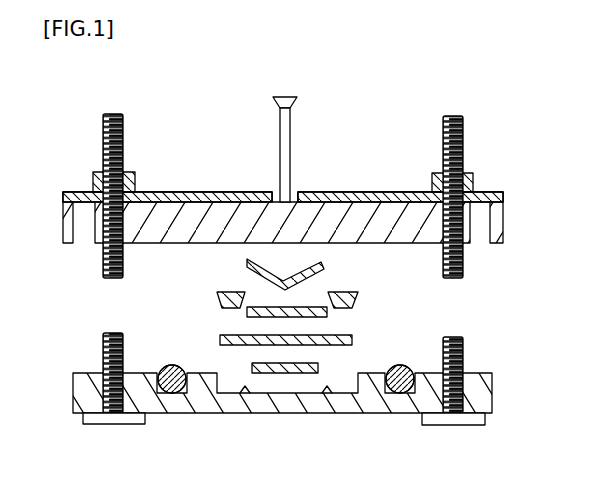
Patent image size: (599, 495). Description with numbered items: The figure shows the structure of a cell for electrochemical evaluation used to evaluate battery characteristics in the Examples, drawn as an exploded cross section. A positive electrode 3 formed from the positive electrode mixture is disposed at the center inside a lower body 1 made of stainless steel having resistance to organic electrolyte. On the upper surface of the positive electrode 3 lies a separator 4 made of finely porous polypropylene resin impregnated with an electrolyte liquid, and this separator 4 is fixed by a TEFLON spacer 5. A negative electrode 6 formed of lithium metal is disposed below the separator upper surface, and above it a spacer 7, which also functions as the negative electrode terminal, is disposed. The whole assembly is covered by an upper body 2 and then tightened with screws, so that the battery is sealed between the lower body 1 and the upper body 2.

The lower body 1 is at (194, 406).
The upper body 2 is at (363, 200).
The positive electrode 3 is at (252, 368).
The separator 4 is at (352, 340).
The spacer 5 is at (358, 298).
The negative electrode 6 is at (327, 312).
The spacer 7 is at (325, 268).